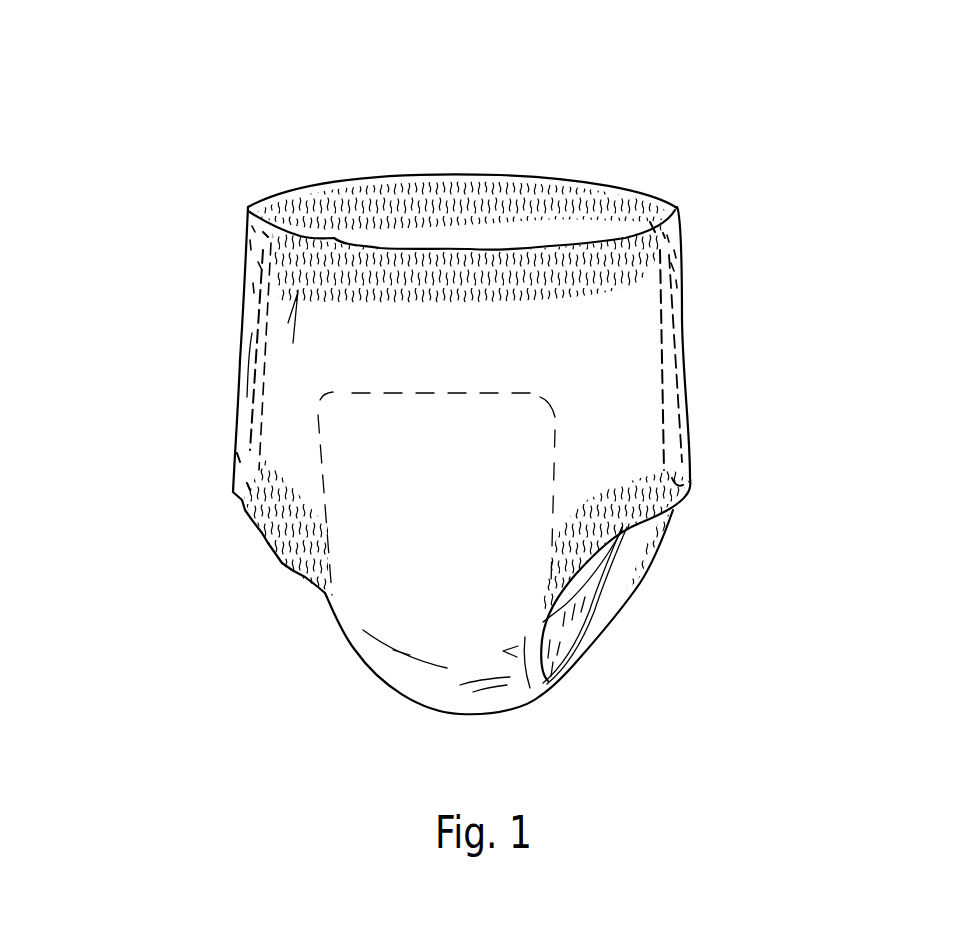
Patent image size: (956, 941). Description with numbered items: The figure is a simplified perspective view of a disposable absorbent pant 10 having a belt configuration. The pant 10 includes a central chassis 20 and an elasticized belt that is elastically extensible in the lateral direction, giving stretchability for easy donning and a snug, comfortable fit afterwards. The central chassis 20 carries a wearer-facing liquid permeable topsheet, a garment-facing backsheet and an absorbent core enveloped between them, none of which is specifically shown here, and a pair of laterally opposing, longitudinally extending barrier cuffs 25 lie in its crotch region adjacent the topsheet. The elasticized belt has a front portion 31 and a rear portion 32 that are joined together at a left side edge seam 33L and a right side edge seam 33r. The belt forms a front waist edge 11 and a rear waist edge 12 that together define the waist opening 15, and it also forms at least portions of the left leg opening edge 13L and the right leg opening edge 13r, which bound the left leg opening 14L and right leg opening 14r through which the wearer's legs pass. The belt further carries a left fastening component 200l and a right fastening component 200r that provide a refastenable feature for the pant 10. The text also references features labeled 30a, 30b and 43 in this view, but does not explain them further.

The disposable absorbent pant 10 is at (688, 170).
The front waist edge 11 is at (440, 247).
The rear waist edge 12 is at (508, 176).
The right leg opening edge 13r is at (293, 535).
The left leg opening edge 13L is at (583, 555).
The right leg opening 14r is at (270, 567).
The left leg opening 14L is at (658, 577).
The waist opening 15 is at (416, 163).
The central chassis 20 is at (497, 697).
The barrier cuffs 25 is at (577, 626).
The front waistband elastic 30a is at (286, 230).
The back waistband elastic 30b is at (330, 190).
The front portion 31 is at (612, 373).
The rear portion 32 is at (578, 227).
The right side edge seam 33r is at (240, 311).
The left side edge seam 33L is at (686, 301).
The crease/fold line 43 is at (332, 304).
The right fastening component 200r is at (251, 270).
The left fastening component 200l is at (683, 256).